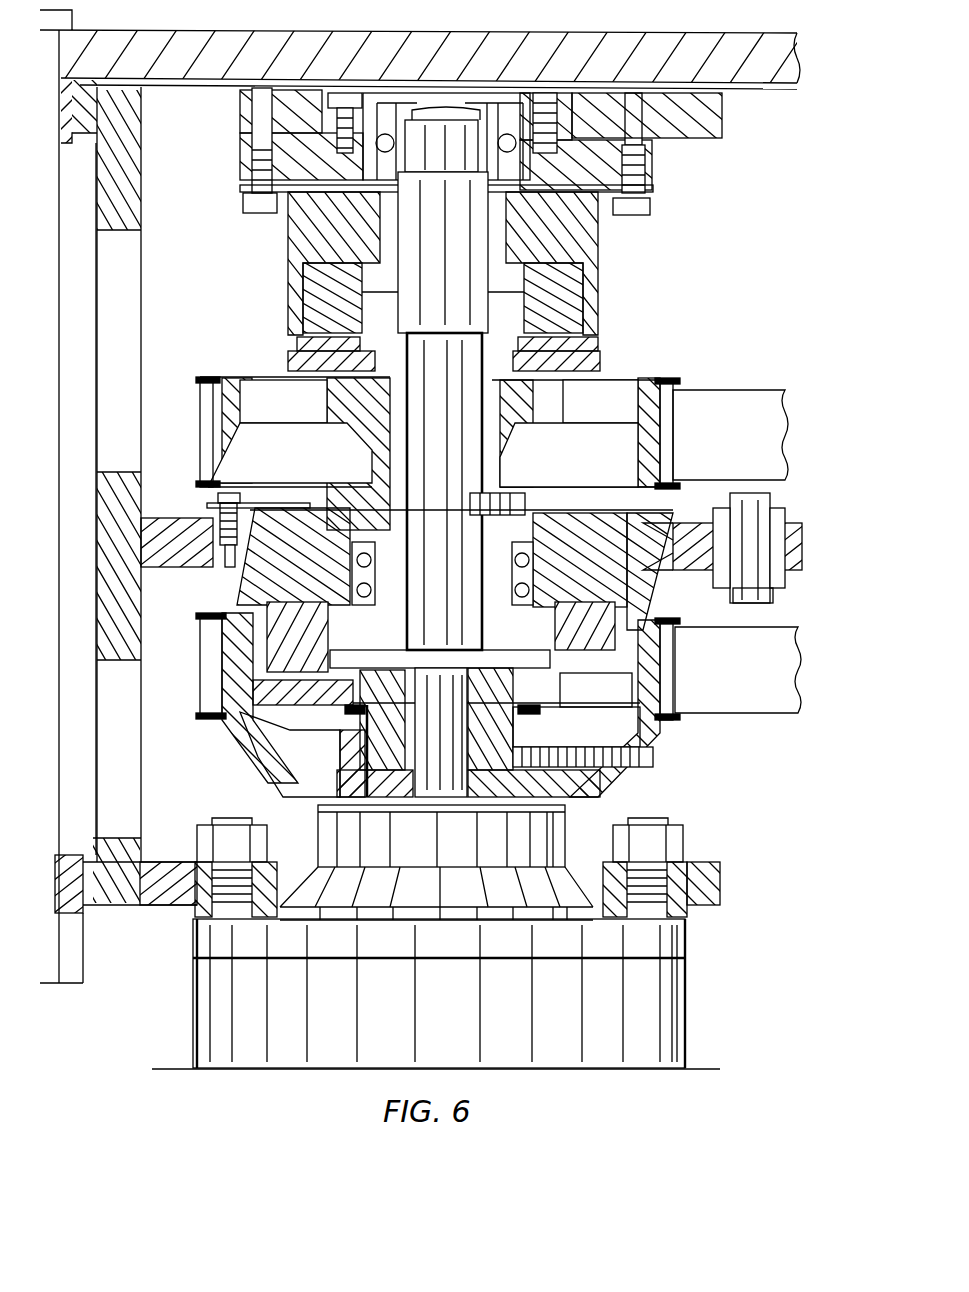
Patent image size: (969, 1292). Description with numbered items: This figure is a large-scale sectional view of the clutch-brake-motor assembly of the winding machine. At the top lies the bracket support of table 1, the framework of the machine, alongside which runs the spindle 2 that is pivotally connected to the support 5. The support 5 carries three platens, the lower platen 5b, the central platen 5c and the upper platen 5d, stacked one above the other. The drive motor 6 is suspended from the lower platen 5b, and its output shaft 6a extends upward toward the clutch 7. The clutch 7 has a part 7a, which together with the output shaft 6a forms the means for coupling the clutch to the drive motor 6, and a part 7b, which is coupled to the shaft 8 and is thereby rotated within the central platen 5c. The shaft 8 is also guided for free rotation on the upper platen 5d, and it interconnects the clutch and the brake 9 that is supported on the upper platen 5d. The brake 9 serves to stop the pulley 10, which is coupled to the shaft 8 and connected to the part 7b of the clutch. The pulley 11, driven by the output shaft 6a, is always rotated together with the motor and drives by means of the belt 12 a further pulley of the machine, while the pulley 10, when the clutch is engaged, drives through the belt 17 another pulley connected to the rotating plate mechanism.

The bracket support of table 1 is at (784, 85).
The spindle 2 is at (50, 308).
The support 5 is at (147, 320).
The lower platen 5b is at (173, 860).
The central platen 5c is at (176, 516).
The upper platen 5d is at (713, 116).
The drive motor 6 is at (186, 999).
The output shaft 6a is at (435, 775).
The clutch 7 is at (495, 758).
The clutch part 7a is at (234, 760).
The clutch part 7b is at (588, 617).
The shaft 8 is at (458, 453).
The brake 9 is at (606, 350).
The pulley 10 is at (677, 380).
The pulley 11 is at (673, 722).
The belt 12 is at (738, 700).
The belt 17 is at (740, 407).